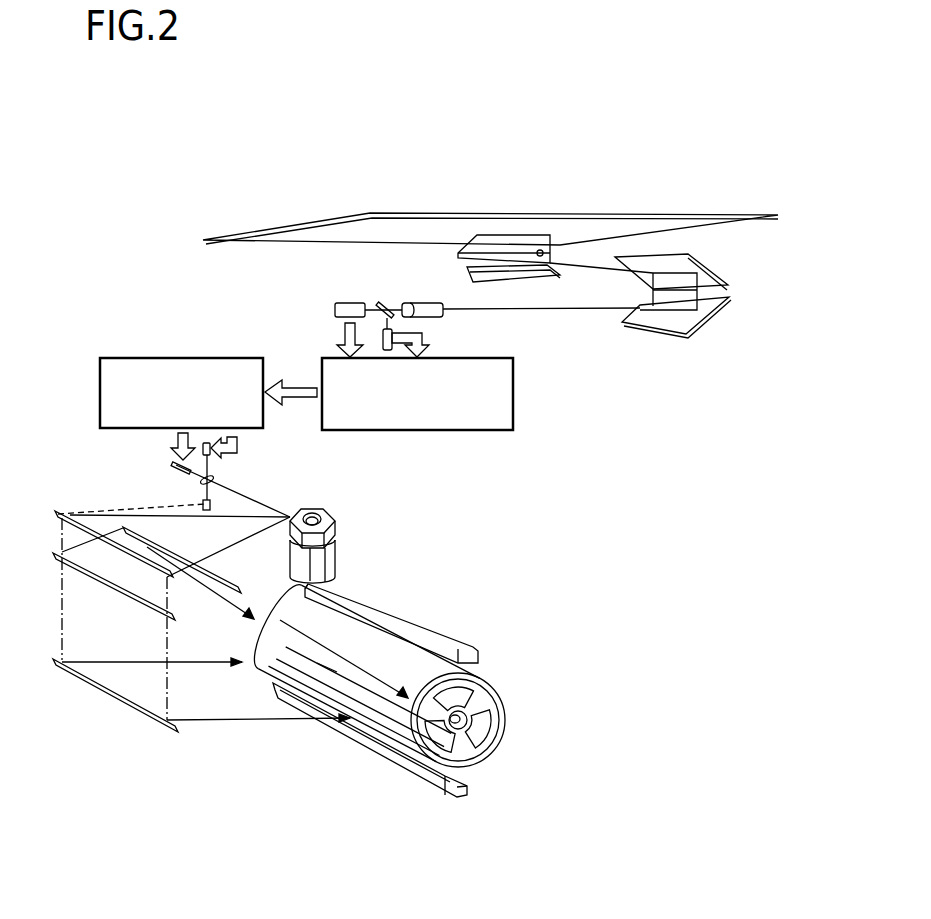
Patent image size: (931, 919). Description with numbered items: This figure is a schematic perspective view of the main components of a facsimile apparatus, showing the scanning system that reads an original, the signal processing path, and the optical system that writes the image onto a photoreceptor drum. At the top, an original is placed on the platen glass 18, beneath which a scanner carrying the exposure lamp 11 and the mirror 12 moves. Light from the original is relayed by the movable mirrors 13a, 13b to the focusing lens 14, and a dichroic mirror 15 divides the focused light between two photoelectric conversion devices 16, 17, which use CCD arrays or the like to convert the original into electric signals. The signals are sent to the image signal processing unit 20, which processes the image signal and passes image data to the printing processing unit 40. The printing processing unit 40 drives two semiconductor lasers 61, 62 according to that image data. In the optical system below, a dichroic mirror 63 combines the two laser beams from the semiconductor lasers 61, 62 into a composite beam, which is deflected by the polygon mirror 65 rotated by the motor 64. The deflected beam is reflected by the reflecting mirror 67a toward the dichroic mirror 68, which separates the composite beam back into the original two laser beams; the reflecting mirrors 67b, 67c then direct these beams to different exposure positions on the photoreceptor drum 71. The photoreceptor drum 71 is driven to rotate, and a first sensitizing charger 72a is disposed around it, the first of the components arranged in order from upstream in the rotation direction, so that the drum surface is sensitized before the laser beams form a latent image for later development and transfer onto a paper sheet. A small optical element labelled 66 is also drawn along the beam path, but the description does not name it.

The platen glass 18 is at (303, 224).
The exposure lamp 11 is at (457, 254).
The mirror 12 is at (535, 278).
The movable mirror 13a is at (703, 266).
The movable mirror 13b is at (708, 318).
The focusing lens 14 is at (440, 316).
The dichroic mirror 15 is at (389, 302).
The photoelectric conversion device 16 is at (335, 308).
The photoelectric conversion device 17 is at (395, 328).
The image signal processing unit 20 is at (462, 431).
The printing processing unit 40 is at (168, 356).
The semiconductor laser 61 is at (172, 466).
The semiconductor laser 62 is at (213, 462).
The dichroic mirror 63 is at (214, 481).
The motor 64 is at (337, 561).
The polygon mirror 65 is at (337, 518).
The cylindrical lens 66 is at (202, 502).
The reflecting mirror 67a is at (56, 511).
The reflecting mirror 67b is at (100, 690).
The reflecting mirror 67c is at (216, 572).
The dichroic mirror 68 is at (80, 573).
The photoreceptor drum 71 is at (505, 735).
The first sensitizing charger 72a is at (468, 645).